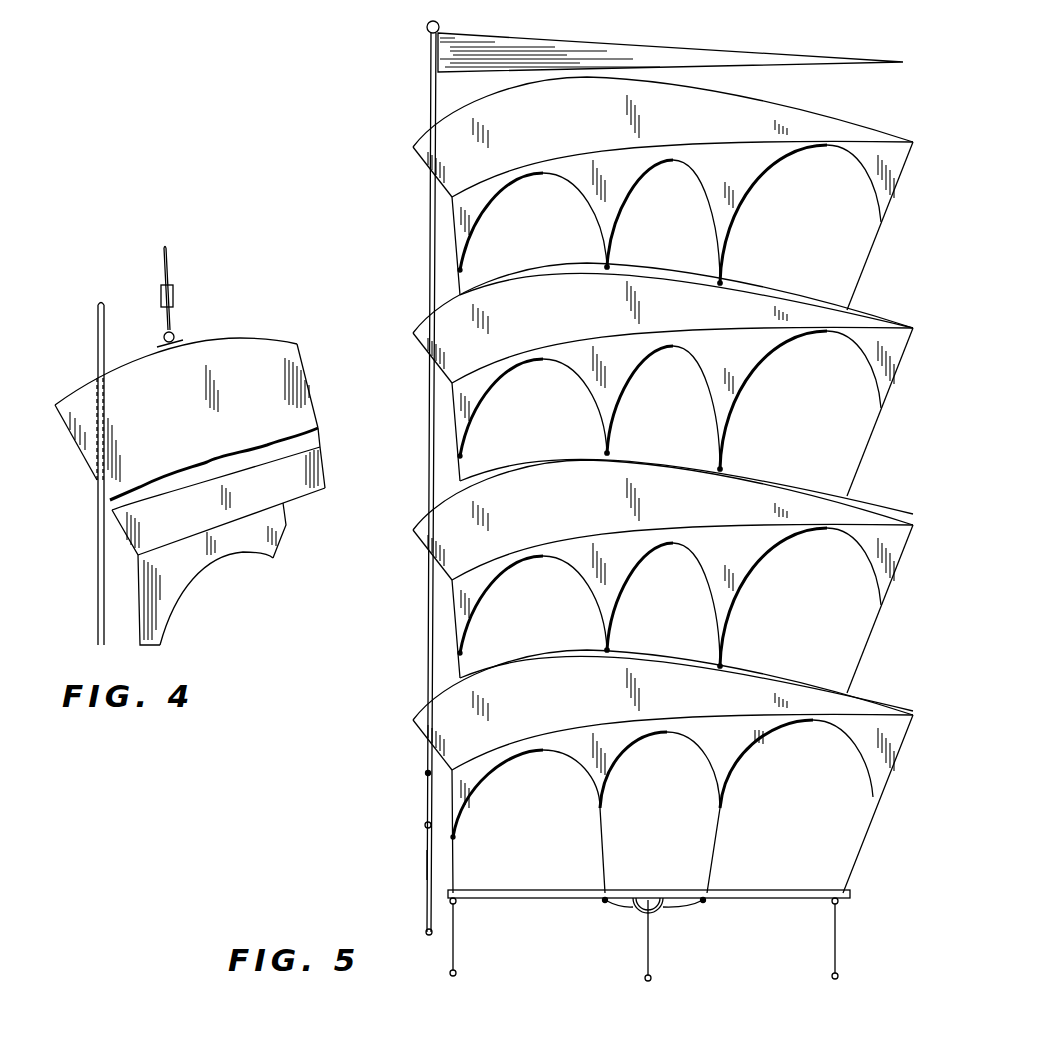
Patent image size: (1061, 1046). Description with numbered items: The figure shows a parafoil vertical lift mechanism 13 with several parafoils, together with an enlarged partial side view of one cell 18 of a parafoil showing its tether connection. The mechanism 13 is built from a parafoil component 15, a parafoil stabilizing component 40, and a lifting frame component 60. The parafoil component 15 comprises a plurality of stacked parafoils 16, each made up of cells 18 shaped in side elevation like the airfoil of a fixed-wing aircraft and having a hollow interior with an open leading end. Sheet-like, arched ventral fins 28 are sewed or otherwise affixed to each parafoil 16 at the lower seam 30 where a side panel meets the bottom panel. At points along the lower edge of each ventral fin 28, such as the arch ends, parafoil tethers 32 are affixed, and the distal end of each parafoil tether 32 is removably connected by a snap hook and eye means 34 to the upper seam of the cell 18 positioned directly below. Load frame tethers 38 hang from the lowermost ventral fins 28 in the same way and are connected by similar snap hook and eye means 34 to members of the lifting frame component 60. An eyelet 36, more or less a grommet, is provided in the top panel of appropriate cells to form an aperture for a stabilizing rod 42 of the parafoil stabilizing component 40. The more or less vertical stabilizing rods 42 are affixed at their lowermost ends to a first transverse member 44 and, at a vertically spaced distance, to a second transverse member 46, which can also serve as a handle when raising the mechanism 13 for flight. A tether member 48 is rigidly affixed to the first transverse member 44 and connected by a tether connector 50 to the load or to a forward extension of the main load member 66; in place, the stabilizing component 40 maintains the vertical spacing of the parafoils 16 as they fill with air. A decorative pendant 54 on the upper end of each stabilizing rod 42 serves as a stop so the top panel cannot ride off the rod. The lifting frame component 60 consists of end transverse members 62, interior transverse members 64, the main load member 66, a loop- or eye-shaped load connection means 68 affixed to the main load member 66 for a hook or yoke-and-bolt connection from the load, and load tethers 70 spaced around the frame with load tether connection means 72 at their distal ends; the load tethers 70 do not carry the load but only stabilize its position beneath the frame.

In FIG. 5, the parafoil vertical lift mechanism 13 is at (380, 143).
In FIG. 5, the parafoil component 15 is at (897, 502).
In FIG. 5, the parafoil 16 is at (581, 116).
In FIG. 4, the cell 18 is at (78, 388).
In FIG. 4, the ventral fin 28 is at (283, 530).
In FIG. 5, the ventral fin 28 is at (721, 168).
In FIG. 5, the lower seam 30 is at (668, 143).
In FIG. 4, the parafoil tether 32 is at (170, 262).
In FIG. 5, the parafoil tether 32 is at (722, 262).
In FIG. 4, the snap hook and eye means 34 is at (185, 338).
In FIG. 5, the snap hook and eye means 34 is at (610, 266).
In FIG. 4, the eyelet 36 is at (110, 375).
In FIG. 5, the load frame tether 38 is at (606, 832).
In FIG. 5, the parafoil stabilizing component 40 is at (414, 805).
In FIG. 4, the stabilizing rod 42 is at (96, 318).
In FIG. 5, the stabilizing rod 42 is at (431, 197).
In FIG. 5, the first transverse member 44 is at (425, 824).
In FIG. 5, the second transverse member 46 is at (425, 773).
In FIG. 5, the tether member 48 is at (425, 865).
In FIG. 5, the tether connector 50 is at (426, 935).
In FIG. 5, the decorative pendant 54 is at (835, 55).
In FIG. 5, the lifting frame component 60 is at (866, 890).
In FIG. 5, the end transverse member 62 is at (458, 902).
In FIG. 5, the interior transverse member 64 is at (605, 903).
In FIG. 5, the main load member 66 is at (742, 890).
In FIG. 5, the load connection means 68 is at (636, 920).
In FIG. 5, the load tether 70 is at (456, 945).
In FIG. 5, the load tether connection means 72 is at (458, 974).